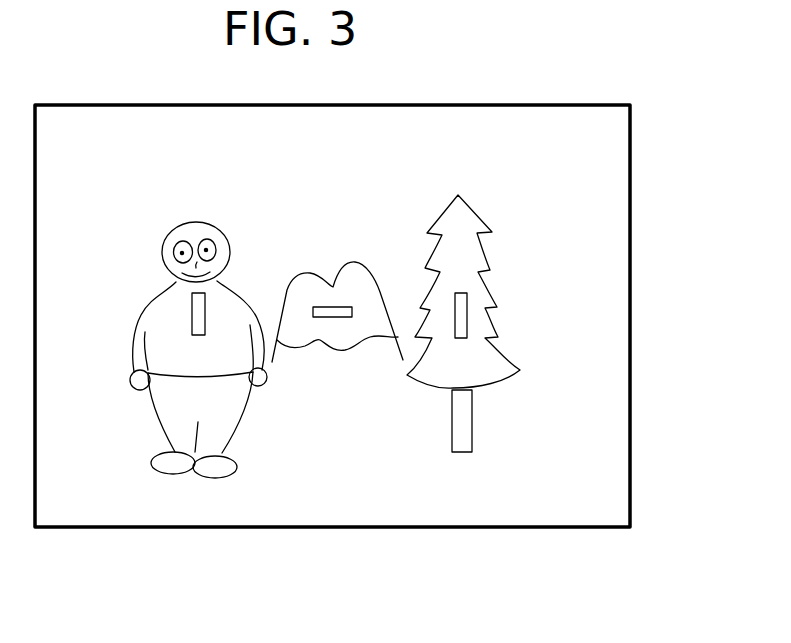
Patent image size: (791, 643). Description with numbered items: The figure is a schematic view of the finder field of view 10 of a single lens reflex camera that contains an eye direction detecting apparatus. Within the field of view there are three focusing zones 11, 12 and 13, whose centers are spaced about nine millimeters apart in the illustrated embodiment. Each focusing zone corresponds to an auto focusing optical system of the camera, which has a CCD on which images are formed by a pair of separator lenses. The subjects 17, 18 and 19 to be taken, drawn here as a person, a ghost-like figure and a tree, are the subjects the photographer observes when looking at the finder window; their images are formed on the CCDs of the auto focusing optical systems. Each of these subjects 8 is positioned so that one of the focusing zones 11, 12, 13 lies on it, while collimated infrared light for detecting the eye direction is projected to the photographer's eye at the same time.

The cut-out figures (shapes) 8 is at (199, 218).
The display board / background panel 10 is at (617, 297).
The focusing zone 11 is at (192, 315).
The focusing zone 12 is at (322, 317).
The focusing zone 13 is at (467, 318).
The subject 17 is at (162, 350).
The subject 18 is at (368, 357).
The subject 19 is at (502, 323).